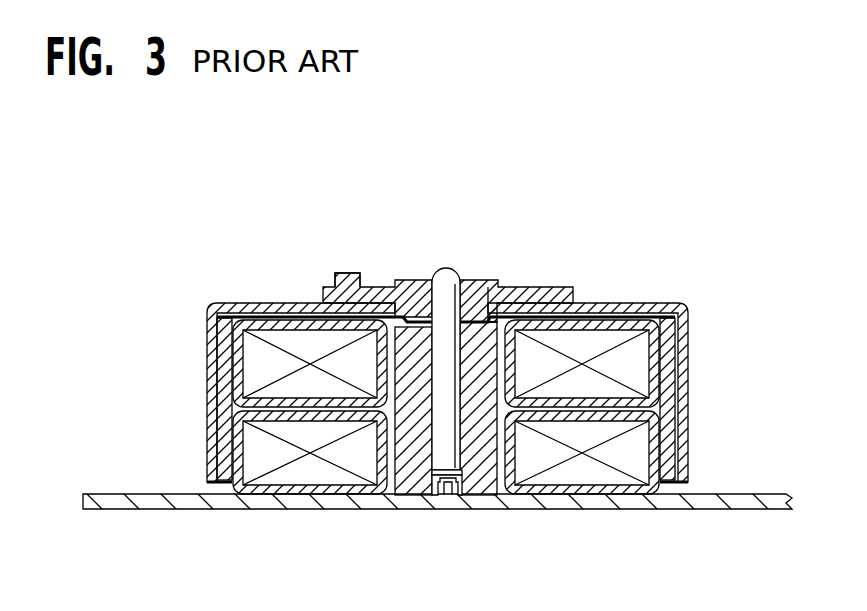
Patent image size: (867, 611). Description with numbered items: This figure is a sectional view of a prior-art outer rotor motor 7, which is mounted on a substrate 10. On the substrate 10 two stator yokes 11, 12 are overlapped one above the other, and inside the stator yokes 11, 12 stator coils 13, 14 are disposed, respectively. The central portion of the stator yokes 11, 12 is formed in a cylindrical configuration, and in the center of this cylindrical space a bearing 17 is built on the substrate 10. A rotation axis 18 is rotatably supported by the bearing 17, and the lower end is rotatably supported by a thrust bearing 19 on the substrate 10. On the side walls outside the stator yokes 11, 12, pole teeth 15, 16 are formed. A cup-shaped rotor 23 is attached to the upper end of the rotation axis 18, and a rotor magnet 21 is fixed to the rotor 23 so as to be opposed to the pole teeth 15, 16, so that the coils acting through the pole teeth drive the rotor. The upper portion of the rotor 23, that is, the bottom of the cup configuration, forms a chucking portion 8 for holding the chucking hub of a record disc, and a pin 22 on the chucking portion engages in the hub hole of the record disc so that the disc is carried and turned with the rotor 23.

The electromagnetic actuator (prior art) 7 is at (650, 258).
The chucking portion 8 is at (411, 290).
The substrate 10 is at (718, 500).
The stator yoke 11 is at (627, 433).
The stator yoke 12 is at (630, 343).
The stator coil 13 is at (300, 468).
The stator coil 14 is at (262, 370).
The pole teeth 15 is at (653, 467).
The pole teeth 16 is at (653, 377).
The bearing 17 is at (413, 478).
The rotation axis 18 is at (446, 278).
The thrust bearing 19 is at (463, 484).
The rotor magnet 21 is at (222, 320).
The pin 22 is at (357, 298).
The rotor 23 is at (263, 307).